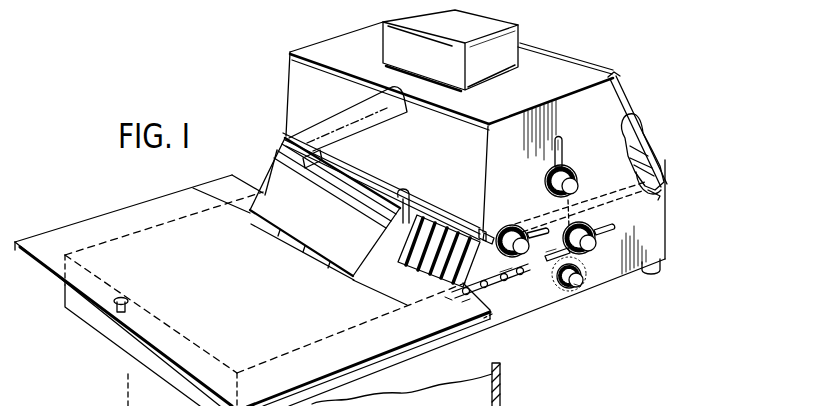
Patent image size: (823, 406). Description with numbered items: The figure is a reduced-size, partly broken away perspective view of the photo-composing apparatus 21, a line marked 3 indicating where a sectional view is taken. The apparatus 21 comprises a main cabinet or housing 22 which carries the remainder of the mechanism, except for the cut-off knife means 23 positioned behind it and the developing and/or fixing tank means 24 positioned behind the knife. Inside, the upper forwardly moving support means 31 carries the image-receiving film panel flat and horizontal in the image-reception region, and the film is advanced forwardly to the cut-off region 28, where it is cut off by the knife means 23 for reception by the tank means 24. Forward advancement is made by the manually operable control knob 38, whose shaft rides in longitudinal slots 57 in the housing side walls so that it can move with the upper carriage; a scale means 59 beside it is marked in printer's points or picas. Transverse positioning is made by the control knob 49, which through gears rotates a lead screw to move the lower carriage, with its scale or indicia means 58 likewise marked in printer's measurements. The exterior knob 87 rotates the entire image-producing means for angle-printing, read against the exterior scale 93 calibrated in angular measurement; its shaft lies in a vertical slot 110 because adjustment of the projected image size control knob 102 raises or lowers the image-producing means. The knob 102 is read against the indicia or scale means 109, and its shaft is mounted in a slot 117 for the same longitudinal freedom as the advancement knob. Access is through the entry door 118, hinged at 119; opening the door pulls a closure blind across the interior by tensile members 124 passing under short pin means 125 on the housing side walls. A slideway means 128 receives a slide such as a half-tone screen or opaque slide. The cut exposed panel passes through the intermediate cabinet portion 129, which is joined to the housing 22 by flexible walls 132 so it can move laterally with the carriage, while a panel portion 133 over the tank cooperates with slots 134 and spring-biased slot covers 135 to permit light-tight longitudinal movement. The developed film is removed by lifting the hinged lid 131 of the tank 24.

The section line 3 is at (127, 380).
The photo-composing apparatus 21 is at (656, 89).
The main cabinet or housing 22 is at (669, 232).
The cut-off knife means 23 is at (404, 171).
The photographic developing and/or fixing tank means 24 is at (126, 199).
The cut-off region 28 is at (366, 209).
The upper forwardly moving support means 31 is at (477, 222).
The forward movement advancement knob 38 is at (487, 280).
The lateral movement adjustment knob 49 is at (578, 284).
The longitudinal slots 57 is at (549, 249).
The scale or indicia means 58 is at (586, 270).
The scale means 59 is at (491, 233).
The exterior knob 87 is at (575, 171).
The exterior scale 93 is at (568, 160).
The projected image size control knob 102 is at (593, 226).
The indicia or scale means 109 is at (539, 222).
The vertical slot 110 is at (547, 166).
The slot 117 is at (549, 256).
The entry door 118 is at (640, 113).
The hinge 119 is at (616, 80).
The tensile members 124 is at (647, 146).
The short pin means 125 is at (663, 153).
The slideway means 128 is at (657, 194).
The intermediate cabinet portion 129 is at (276, 197).
The hinged lid 131 is at (343, 358).
The flexible walls 132 is at (280, 197).
The panel portion 133 is at (458, 320).
The slots 134 is at (496, 318).
The spring-biased slot covers 135 is at (506, 274).